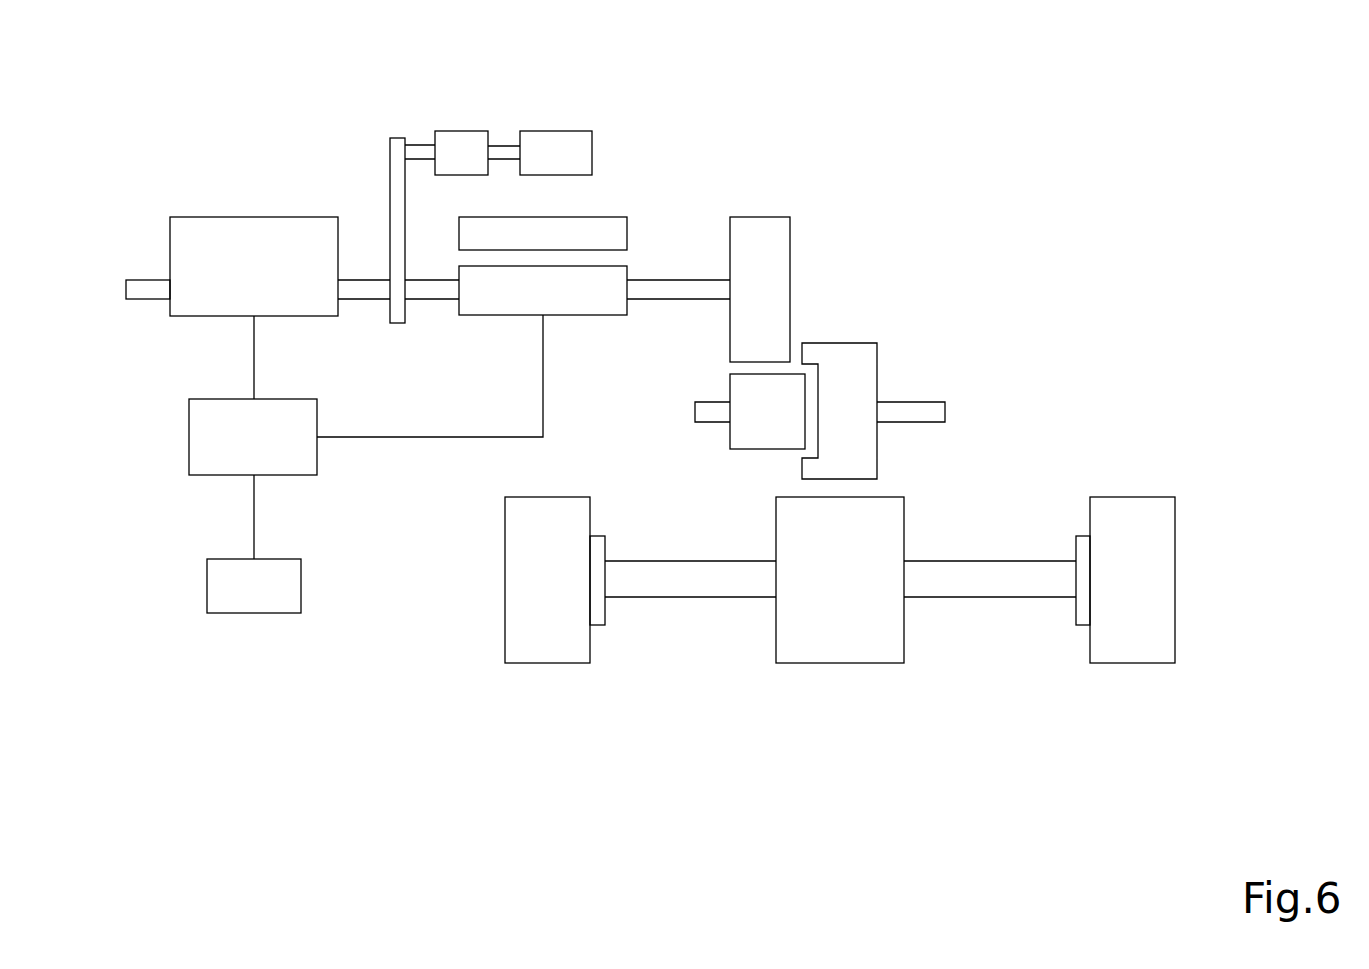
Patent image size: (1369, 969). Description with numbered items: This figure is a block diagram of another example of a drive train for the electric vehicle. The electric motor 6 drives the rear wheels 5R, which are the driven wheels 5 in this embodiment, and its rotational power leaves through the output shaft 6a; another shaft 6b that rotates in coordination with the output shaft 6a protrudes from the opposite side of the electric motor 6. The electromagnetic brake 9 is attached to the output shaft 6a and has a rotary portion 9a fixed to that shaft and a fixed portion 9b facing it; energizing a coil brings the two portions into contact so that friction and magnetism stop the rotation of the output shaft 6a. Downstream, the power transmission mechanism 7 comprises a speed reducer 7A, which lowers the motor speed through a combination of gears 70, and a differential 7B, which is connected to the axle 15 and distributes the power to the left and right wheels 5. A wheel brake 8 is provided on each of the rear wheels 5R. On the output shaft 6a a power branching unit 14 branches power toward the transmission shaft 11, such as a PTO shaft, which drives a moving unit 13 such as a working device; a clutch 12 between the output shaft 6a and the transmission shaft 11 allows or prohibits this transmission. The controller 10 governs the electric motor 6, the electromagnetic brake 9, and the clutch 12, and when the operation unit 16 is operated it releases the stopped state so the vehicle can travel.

The wheel 5 is at (847, 625).
The rear wheel 5R is at (544, 663).
The electric motor 6 is at (292, 217).
The output shaft 6a is at (353, 302).
The other shaft 6b is at (148, 277).
The power transmission mechanism 7 is at (866, 456).
The speed reducer 7A is at (834, 318).
The differential 7B is at (857, 663).
The wheel brake 8 is at (605, 612).
The electromagnetic brake 9 is at (594, 257).
The rotary portion 9a is at (593, 316).
The fixed portion 9b is at (627, 232).
The controller 10 is at (317, 457).
The transmission shaft 11 is at (507, 146).
The clutch 12 is at (453, 131).
The moving unit 13 is at (573, 131).
The power branching unit 14 is at (390, 170).
The axle 15 is at (677, 597).
The operation unit 16 is at (301, 590).
The gear 70 is at (790, 245).